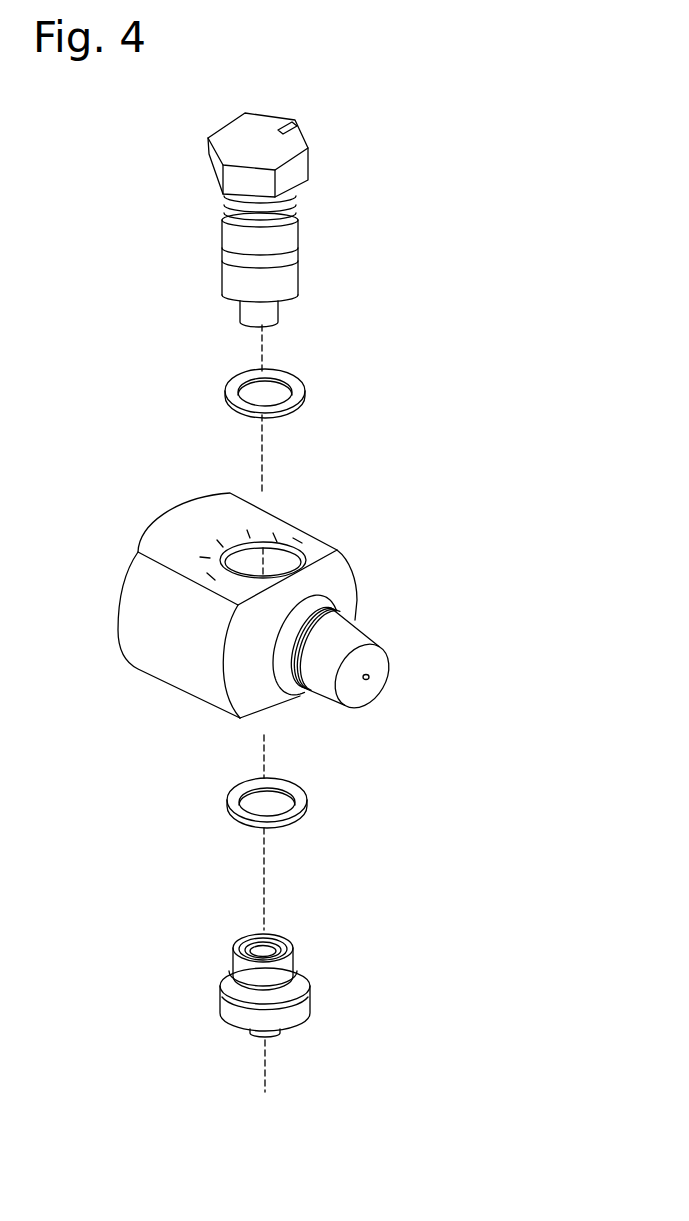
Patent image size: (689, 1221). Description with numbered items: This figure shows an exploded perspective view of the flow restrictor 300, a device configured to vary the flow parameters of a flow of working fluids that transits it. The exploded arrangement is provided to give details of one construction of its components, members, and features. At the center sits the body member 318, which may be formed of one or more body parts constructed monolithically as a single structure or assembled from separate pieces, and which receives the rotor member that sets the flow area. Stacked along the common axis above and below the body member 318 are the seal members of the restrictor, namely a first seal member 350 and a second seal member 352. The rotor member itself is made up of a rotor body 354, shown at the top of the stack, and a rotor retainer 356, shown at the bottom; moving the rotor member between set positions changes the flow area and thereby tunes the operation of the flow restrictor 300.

The flow restrictor 300 is at (492, 120).
The body member 318 is at (363, 547).
The first seal member 350 is at (310, 387).
The second seal member 352 is at (313, 798).
The rotor body 354 is at (332, 167).
The rotor retainer 356 is at (315, 972).